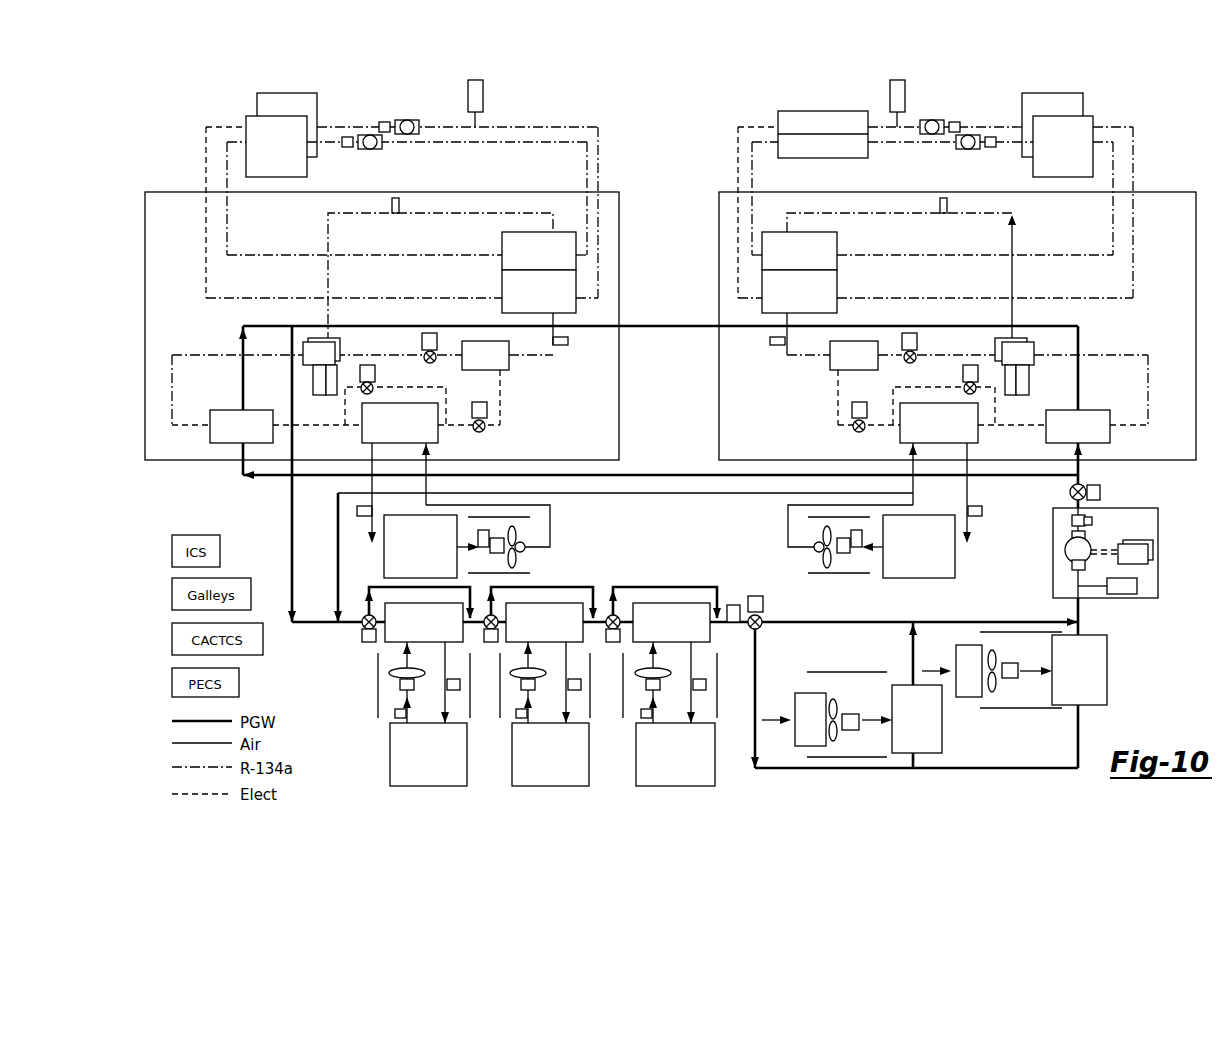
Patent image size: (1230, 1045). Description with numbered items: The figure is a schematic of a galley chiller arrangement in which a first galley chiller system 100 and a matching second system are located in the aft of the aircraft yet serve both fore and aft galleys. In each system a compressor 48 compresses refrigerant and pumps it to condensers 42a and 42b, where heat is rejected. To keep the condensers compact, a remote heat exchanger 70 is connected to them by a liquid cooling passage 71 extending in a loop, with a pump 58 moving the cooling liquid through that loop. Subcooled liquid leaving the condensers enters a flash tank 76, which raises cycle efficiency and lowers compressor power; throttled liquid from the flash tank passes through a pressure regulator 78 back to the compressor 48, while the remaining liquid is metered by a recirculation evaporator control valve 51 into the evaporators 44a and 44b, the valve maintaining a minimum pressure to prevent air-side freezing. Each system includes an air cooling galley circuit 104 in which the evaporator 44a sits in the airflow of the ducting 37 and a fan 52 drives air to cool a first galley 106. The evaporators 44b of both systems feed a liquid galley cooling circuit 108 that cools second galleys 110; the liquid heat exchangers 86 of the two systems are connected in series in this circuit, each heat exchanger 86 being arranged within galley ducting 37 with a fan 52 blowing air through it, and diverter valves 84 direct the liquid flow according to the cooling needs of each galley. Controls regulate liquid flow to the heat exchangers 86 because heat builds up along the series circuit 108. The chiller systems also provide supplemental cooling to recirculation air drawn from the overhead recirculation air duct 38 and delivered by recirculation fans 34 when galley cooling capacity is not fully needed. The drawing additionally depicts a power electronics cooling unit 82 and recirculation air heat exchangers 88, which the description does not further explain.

The first galley chiller system 100 is at (520, 70).
The heat exchanger 70 is at (259, 116).
The pump 58 is at (370, 135).
The liquid cooling passage 71 is at (590, 123).
The condenser 42a is at (502, 246).
The condenser 42b is at (502, 288).
The compressor 48 is at (668, 366).
The pressure regulator 78 is at (422, 342).
The recirculation evaporator control valve 51 is at (375, 374).
The flash tank 76 is at (509, 362).
The evaporator 44a is at (438, 430).
The evaporator 44b is at (210, 432).
The liquid galley cooling circuit 108 is at (275, 494).
The first galley 106 is at (384, 552).
The ducting 37 is at (527, 523).
The fan 52 is at (500, 553).
The air cooling galley circuit 104 is at (565, 531).
The liquid heat exchanger 86 is at (388, 603).
The diverter valve 84 is at (1100, 492).
The power electronics cooling unit 82 is at (1070, 565).
The overhead recirculation air duct 38 is at (818, 672).
The recirculation fan 34 is at (850, 714).
The recirculation air heat exchanger 88 is at (1107, 670).
The second galleys 110 is at (425, 786).